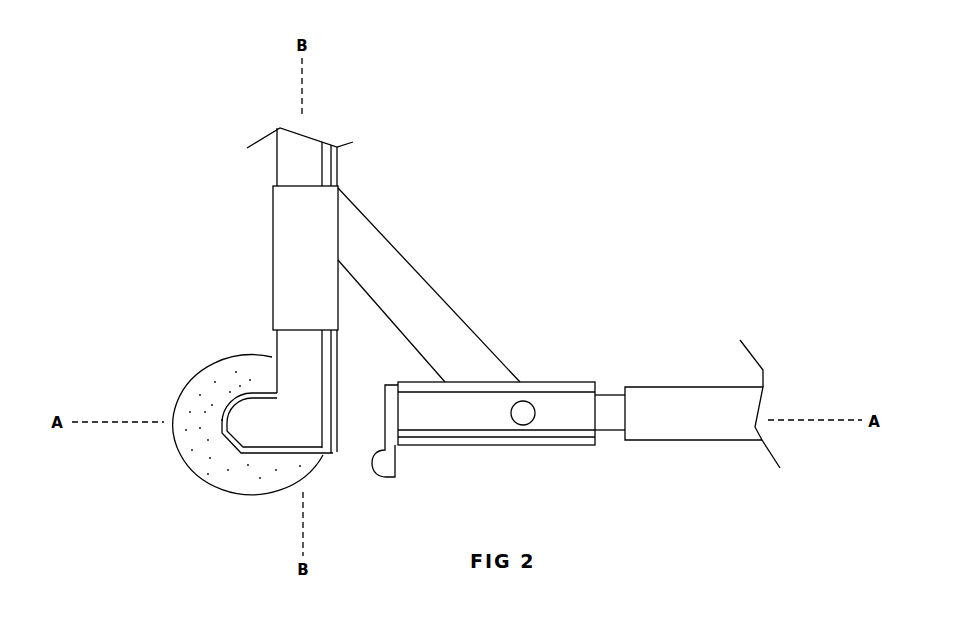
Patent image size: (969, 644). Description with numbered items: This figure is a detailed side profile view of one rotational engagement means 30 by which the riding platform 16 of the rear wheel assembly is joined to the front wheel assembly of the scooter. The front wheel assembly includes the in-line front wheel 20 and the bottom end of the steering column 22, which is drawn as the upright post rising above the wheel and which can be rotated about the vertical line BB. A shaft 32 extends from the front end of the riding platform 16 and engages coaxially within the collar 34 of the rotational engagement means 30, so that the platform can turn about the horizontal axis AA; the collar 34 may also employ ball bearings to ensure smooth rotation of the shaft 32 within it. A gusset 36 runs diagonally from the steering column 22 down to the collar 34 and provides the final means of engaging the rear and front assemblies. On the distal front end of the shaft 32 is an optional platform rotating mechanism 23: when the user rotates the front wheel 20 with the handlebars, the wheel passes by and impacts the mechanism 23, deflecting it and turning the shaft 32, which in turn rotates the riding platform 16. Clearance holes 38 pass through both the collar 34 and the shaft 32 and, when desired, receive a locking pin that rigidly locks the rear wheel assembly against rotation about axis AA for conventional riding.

The riding platform 16 is at (686, 438).
The in-line front wheel 20 is at (197, 468).
The bottom end of the steering column 22 is at (271, 226).
The platform rotating mechanism 23 is at (378, 480).
The rotational engagement means 30 is at (514, 256).
The shaft 32 is at (603, 393).
The collar 34 is at (543, 382).
The gusset 36 is at (415, 267).
The clearance holes 38 is at (520, 426).